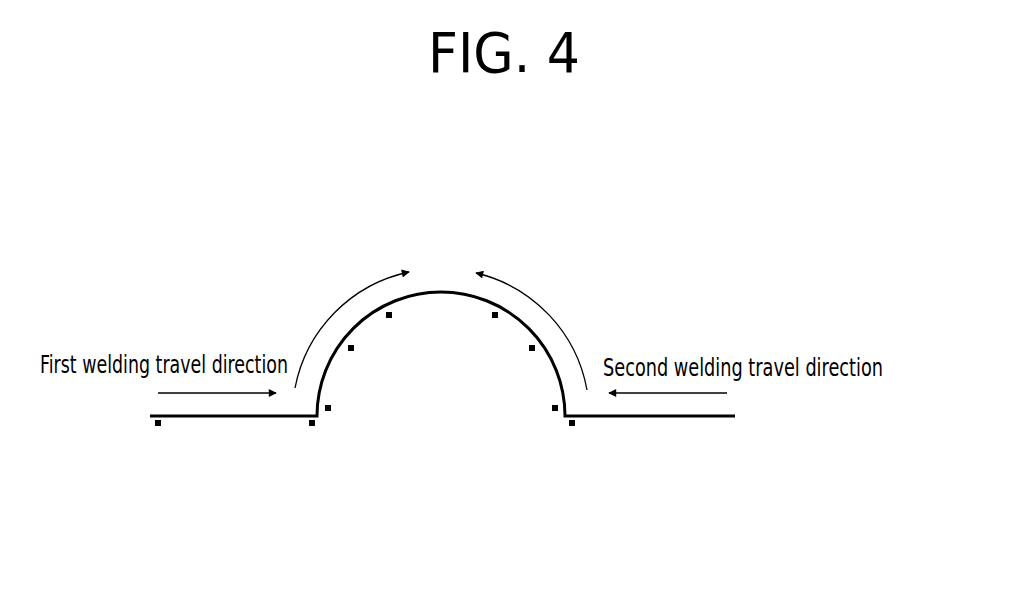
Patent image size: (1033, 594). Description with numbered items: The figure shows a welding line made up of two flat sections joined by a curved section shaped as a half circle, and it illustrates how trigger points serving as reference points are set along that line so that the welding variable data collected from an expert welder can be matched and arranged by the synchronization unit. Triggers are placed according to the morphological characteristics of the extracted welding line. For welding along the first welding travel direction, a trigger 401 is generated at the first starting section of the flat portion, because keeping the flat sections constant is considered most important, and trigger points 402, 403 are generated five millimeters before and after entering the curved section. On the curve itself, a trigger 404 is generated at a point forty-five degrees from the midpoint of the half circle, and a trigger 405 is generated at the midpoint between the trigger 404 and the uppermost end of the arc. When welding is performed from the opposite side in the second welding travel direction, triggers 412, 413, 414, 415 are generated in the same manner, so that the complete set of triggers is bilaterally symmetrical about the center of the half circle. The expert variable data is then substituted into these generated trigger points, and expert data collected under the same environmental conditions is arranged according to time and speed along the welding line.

The trigger 401 is at (158, 428).
The trigger point 402 is at (312, 428).
The trigger point 403 is at (330, 413).
The trigger 404 is at (356, 353).
The trigger 405 is at (392, 320).
The trigger 412 is at (572, 428).
The trigger 413 is at (553, 413).
The trigger 414 is at (530, 353).
The trigger 415 is at (493, 320).